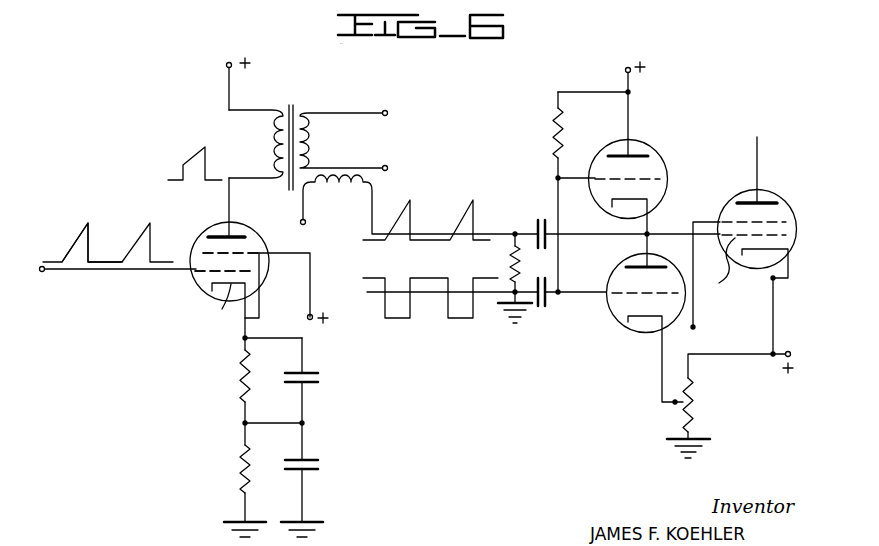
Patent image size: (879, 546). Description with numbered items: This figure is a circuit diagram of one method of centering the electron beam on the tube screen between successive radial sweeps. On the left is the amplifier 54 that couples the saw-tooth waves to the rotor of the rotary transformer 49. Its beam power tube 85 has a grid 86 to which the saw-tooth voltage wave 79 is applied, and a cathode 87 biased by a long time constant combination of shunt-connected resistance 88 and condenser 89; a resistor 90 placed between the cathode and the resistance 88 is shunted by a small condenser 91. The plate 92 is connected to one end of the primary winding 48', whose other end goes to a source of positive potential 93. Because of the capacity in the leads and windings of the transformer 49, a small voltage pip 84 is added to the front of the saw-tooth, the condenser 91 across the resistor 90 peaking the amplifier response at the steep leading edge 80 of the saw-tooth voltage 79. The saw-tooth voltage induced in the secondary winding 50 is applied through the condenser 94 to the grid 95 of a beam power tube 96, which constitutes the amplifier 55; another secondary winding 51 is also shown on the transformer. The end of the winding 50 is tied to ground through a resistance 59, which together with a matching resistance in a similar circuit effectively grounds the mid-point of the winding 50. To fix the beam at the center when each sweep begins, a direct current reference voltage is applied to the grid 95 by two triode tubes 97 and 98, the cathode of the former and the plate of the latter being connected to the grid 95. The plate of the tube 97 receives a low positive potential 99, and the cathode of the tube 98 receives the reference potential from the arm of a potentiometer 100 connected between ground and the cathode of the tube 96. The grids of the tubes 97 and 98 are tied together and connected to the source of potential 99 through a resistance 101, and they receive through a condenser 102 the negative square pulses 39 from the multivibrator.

The negative square pulses 39 is at (382, 304).
The primary winding 48' is at (256, 144).
The rotary transformer 49 is at (293, 100).
The secondary winding 50 is at (334, 194).
The transformer secondary winding 51 is at (315, 153).
The amplifier 54 is at (208, 229).
The amplifier 55 is at (739, 189).
The resistance 59 is at (509, 272).
The saw-tooth voltage wave 79 is at (89, 232).
The steep leading edge 80 is at (60, 258).
The voltage pip 84 is at (182, 167).
The beam power tube 85 is at (269, 260).
The grid 86 is at (206, 273).
The cathode 87 is at (226, 310).
The resistance 88 is at (239, 475).
The condenser 89 is at (322, 470).
The resistor 90 is at (239, 392).
The condenser 91 is at (343, 370).
The plate 92 is at (236, 237).
The source of positive potential 93 is at (226, 68).
The condenser 94 is at (537, 218).
The grid 95 is at (721, 271).
The beam power tube 96 is at (775, 199).
The triode tube 97 is at (679, 136).
The triode tube 98 is at (610, 306).
The source of potential 99 is at (626, 70).
The potentiometer 100 is at (674, 403).
The resistance 101 is at (555, 152).
The condenser 102 is at (547, 307).